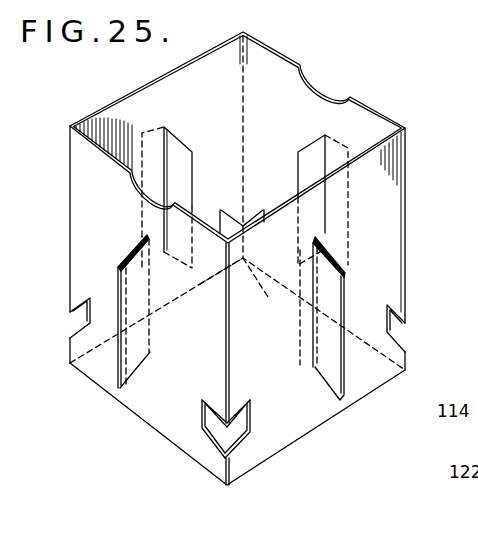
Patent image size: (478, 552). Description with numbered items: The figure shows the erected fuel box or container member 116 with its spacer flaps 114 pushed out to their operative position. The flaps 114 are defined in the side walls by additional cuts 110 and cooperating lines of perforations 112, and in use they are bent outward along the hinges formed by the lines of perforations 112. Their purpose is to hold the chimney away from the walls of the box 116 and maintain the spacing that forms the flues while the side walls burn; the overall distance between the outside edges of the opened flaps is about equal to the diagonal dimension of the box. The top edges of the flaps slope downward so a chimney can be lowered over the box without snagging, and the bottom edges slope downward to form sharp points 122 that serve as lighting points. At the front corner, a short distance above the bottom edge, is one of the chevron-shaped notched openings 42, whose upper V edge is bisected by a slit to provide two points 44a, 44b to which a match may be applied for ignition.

The fuel box or container member 116 is at (391, 109).
The cuts 110 is at (298, 178).
The spacer flaps 114 is at (142, 205).
The lines of perforations 112 is at (150, 292).
The sharp points 122 is at (121, 388).
The notched openings 42 is at (207, 448).
The point 44a is at (223, 437).
The point 44b is at (252, 431).